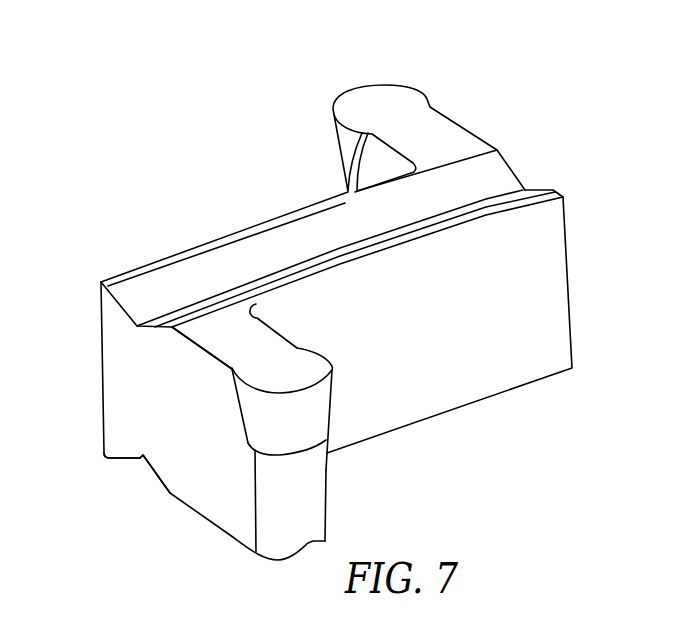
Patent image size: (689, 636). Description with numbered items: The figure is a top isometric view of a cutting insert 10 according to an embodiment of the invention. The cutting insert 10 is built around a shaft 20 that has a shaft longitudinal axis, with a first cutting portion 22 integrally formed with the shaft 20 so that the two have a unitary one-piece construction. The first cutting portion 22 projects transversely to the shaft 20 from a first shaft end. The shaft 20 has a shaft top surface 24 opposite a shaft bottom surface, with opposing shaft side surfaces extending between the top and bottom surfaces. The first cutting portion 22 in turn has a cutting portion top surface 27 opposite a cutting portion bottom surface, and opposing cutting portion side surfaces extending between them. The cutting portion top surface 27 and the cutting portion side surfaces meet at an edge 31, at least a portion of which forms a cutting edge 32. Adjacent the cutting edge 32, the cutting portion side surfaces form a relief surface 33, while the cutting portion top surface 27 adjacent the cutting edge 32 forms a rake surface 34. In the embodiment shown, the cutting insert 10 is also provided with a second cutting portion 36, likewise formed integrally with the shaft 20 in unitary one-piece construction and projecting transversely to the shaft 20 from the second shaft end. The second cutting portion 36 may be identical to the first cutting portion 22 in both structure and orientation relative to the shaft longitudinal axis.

The cutting insert 10 is at (543, 147).
The shaft 20 is at (277, 193).
The first cutting portion 22 is at (213, 443).
The shaft top surface 24 is at (198, 270).
The cutting portion top surface 27 is at (217, 356).
The edge 31 is at (238, 353).
The cutting edge 32 is at (303, 388).
The relief surface 33 is at (287, 438).
The rake surface 34 is at (278, 368).
The second cutting portion 36 is at (427, 80).